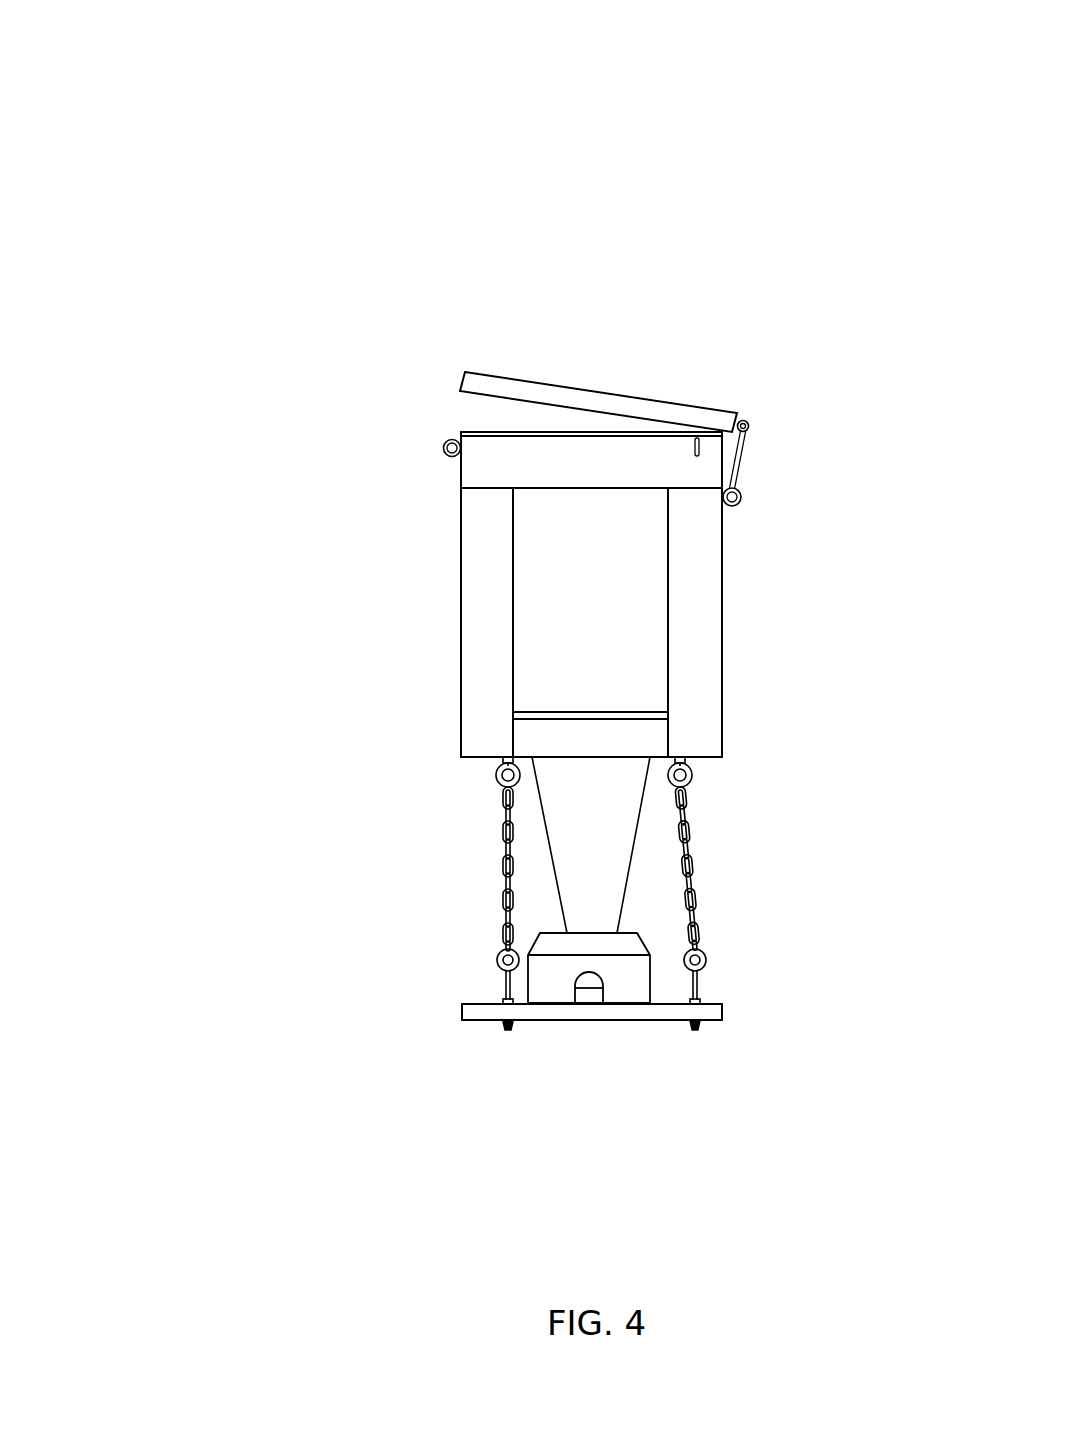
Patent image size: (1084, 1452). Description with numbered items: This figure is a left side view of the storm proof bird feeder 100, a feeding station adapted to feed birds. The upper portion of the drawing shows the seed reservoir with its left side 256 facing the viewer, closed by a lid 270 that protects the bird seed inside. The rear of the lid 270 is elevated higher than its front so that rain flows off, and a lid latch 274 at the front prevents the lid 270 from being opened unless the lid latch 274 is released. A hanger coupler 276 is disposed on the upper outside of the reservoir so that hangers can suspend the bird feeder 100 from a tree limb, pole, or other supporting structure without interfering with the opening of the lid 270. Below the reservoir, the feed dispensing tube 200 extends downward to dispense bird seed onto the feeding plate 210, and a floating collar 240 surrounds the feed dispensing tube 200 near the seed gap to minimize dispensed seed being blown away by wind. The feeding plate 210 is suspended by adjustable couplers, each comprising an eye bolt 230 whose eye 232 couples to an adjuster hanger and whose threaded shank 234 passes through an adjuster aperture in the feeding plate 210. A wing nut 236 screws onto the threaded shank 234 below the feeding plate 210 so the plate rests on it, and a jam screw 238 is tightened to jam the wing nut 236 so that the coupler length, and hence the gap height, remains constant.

The storm proof bird feeder 100 is at (195, 173).
The feed dispensing tube 200 is at (550, 850).
The feeding plate 210 is at (466, 1015).
The eye bolt 230 is at (503, 988).
The eye 232 is at (703, 955).
The threaded shank 234 is at (698, 988).
The wing nut 236 is at (700, 1027).
The jam screw 238 is at (702, 1000).
The floating collar 240 is at (635, 943).
The left side 256 is at (537, 578).
The lid 270 is at (553, 398).
The lid latch 274 is at (745, 462).
The hanger couplers 276 is at (443, 444).